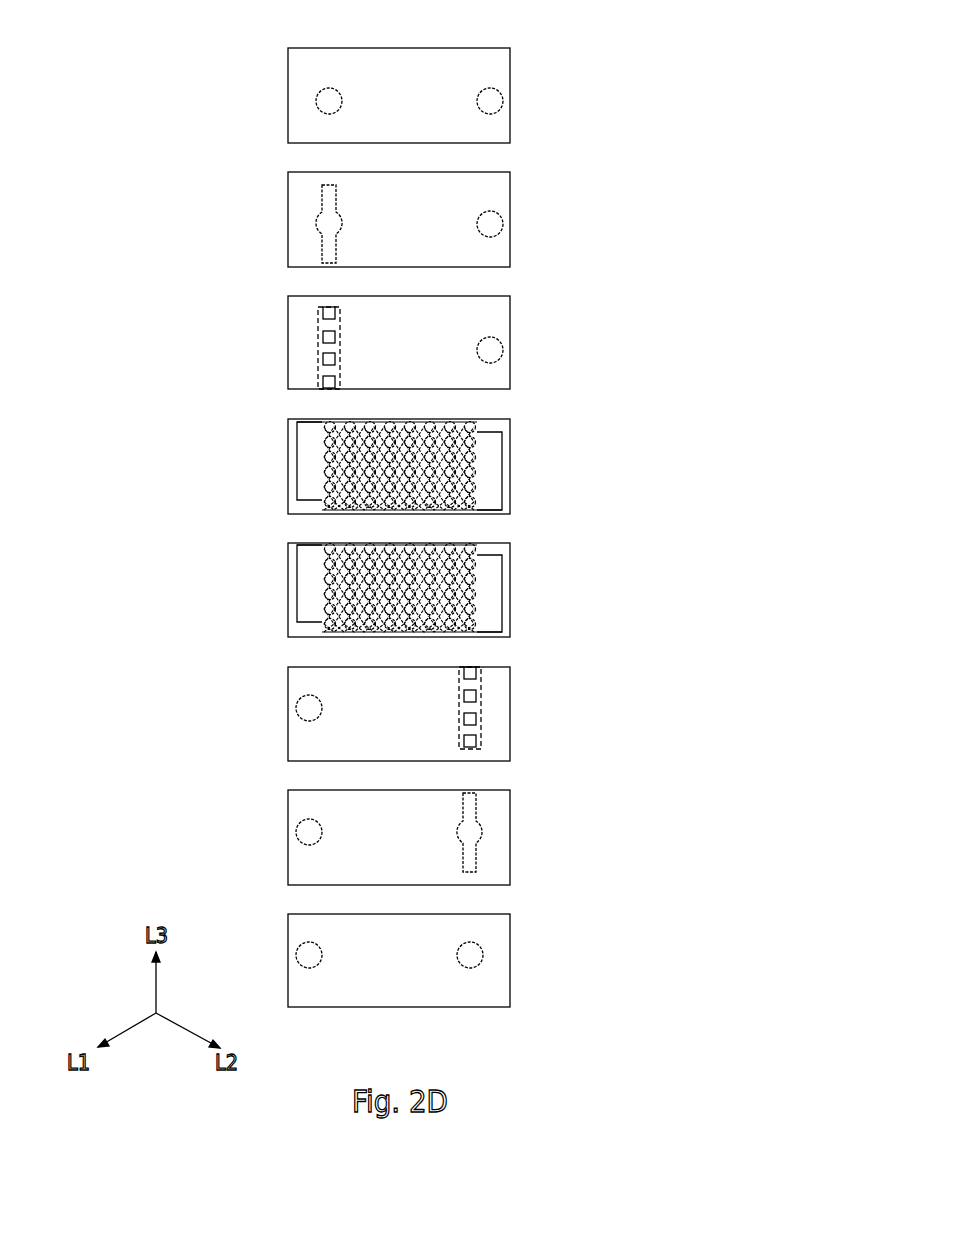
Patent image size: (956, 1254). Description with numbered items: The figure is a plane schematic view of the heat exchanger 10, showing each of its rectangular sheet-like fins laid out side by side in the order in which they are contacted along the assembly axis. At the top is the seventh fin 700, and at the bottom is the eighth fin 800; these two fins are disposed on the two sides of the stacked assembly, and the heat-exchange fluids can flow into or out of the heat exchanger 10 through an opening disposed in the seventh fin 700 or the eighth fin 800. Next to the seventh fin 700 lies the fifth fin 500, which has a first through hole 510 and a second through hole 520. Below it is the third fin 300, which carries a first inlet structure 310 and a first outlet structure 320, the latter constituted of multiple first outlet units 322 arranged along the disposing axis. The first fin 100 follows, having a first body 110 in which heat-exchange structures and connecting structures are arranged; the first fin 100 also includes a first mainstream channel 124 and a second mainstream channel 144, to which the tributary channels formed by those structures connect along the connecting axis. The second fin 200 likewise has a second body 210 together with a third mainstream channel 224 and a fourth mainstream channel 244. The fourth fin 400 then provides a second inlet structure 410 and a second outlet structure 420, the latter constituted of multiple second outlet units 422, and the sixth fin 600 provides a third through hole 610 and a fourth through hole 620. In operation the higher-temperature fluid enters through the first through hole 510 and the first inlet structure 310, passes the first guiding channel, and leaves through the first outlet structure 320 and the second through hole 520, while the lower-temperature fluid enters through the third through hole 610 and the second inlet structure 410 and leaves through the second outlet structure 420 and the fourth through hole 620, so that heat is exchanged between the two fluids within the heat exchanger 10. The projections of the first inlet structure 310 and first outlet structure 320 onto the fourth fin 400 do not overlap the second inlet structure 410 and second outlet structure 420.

The heat exchanger 10 is at (668, 1067).
The first fin 100 is at (380, 462).
The first body 110 is at (505, 493).
The first mainstream channel 124 is at (495, 455).
The second mainstream channel 144 is at (305, 448).
The second fin 200 is at (380, 585).
The second body 210 is at (505, 616).
The third mainstream channel 224 is at (305, 572).
The fourth mainstream channel 244 is at (495, 580).
The third fin 300 is at (376, 333).
The first inlet structure 310 is at (493, 350).
The first outlet structure 320 is at (318, 346).
The first outlet units 322 is at (323, 312).
The fourth fin 400 is at (380, 713).
The second inlet structure 410 is at (300, 703).
The second outlet structure 420 is at (478, 708).
The second outlet units 422 is at (478, 741).
The fifth fin 500 is at (376, 213).
The first through hole 510 is at (493, 224).
The second through hole 520 is at (323, 240).
The sixth fin 600 is at (380, 837).
The third through hole 610 is at (298, 830).
The fourth through hole 620 is at (472, 832).
The seventh fin 700 is at (272, 84).
The eighth fin 800 is at (525, 960).